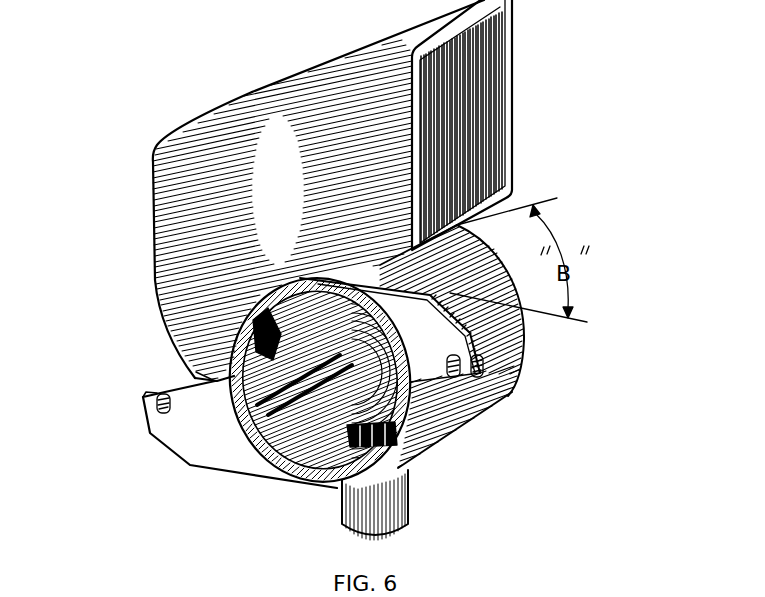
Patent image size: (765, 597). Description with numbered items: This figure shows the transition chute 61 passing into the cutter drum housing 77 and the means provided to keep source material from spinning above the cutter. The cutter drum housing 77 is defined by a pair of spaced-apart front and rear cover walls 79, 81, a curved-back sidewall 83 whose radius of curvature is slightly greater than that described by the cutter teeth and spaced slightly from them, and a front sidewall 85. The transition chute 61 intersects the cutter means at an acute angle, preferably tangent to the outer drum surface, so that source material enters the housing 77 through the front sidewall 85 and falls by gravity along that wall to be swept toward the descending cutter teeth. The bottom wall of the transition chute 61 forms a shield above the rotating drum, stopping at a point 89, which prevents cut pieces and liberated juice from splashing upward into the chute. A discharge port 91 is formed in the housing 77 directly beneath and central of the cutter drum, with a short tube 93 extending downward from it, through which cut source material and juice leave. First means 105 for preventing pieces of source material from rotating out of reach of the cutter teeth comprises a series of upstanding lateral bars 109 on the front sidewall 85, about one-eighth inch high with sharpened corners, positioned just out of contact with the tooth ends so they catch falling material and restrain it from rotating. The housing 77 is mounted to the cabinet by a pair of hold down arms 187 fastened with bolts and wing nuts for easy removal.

The transition chute 61 is at (470, 200).
The cutter drum housing 77 is at (153, 172).
The front cover wall 79 is at (528, 342).
The rear cover wall 81 is at (215, 448).
The curved-back sidewall 83 is at (463, 403).
The front sidewall 85 is at (320, 300).
The point 89 is at (346, 272).
The discharge port 91 is at (307, 473).
The short tube 93 is at (408, 508).
The first means 105 is at (222, 354).
The lateral bars 109 is at (257, 408).
The hold down arms 187 is at (163, 433).